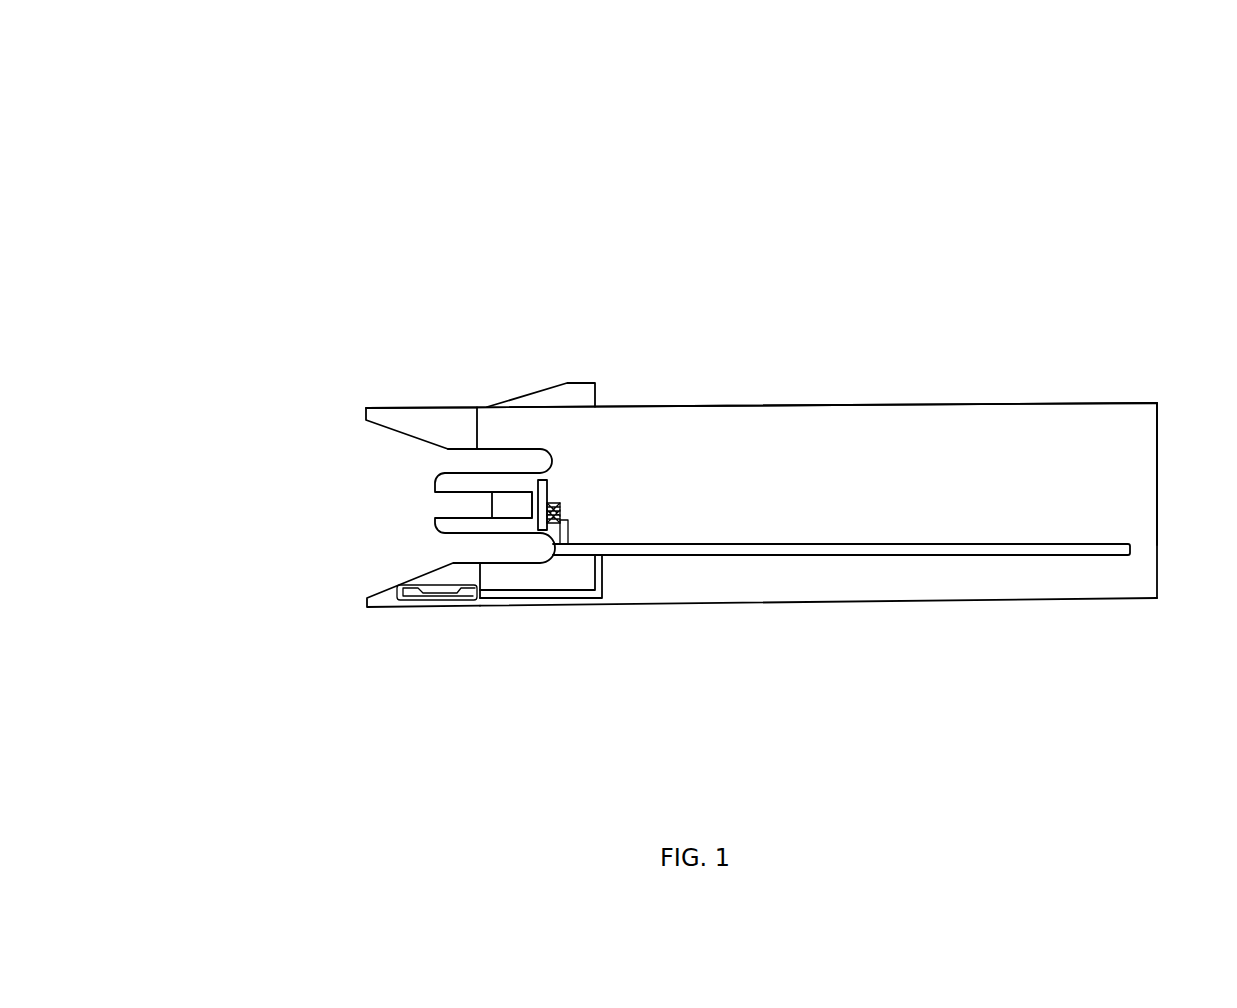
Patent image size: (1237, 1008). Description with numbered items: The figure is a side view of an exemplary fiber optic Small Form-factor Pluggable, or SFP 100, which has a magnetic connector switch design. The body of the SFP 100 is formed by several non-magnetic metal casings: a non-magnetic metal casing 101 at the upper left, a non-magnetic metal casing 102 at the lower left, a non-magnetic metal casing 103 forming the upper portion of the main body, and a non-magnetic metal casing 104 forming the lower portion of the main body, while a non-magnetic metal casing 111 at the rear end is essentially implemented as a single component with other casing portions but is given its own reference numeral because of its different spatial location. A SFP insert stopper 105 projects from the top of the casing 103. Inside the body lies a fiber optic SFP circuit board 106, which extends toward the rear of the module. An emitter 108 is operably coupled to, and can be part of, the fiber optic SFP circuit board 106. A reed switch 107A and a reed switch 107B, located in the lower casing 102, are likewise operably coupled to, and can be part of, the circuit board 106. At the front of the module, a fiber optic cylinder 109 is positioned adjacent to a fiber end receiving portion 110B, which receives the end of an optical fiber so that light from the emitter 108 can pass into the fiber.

The fiber optic Small Form-factor Pluggable (SFP) 100 is at (933, 170).
The non-magnetic metal casing 101 is at (417, 407).
The non-magnetic metal casing 102 is at (367, 607).
The non-magnetic metal casing 103 is at (885, 403).
The non-magnetic metal casing 104 is at (778, 607).
The SFP insert stopper 105 is at (578, 380).
The fiber optic SFP circuit board 106 is at (953, 555).
The reed switch 107A is at (473, 610).
The reed switch 107B is at (491, 672).
The emitter 108 is at (553, 490).
The fiber optic cylinder 109 is at (490, 512).
The fiber end receiving portion 110B is at (432, 483).
The non-magnetic metal casing 111 is at (1158, 468).